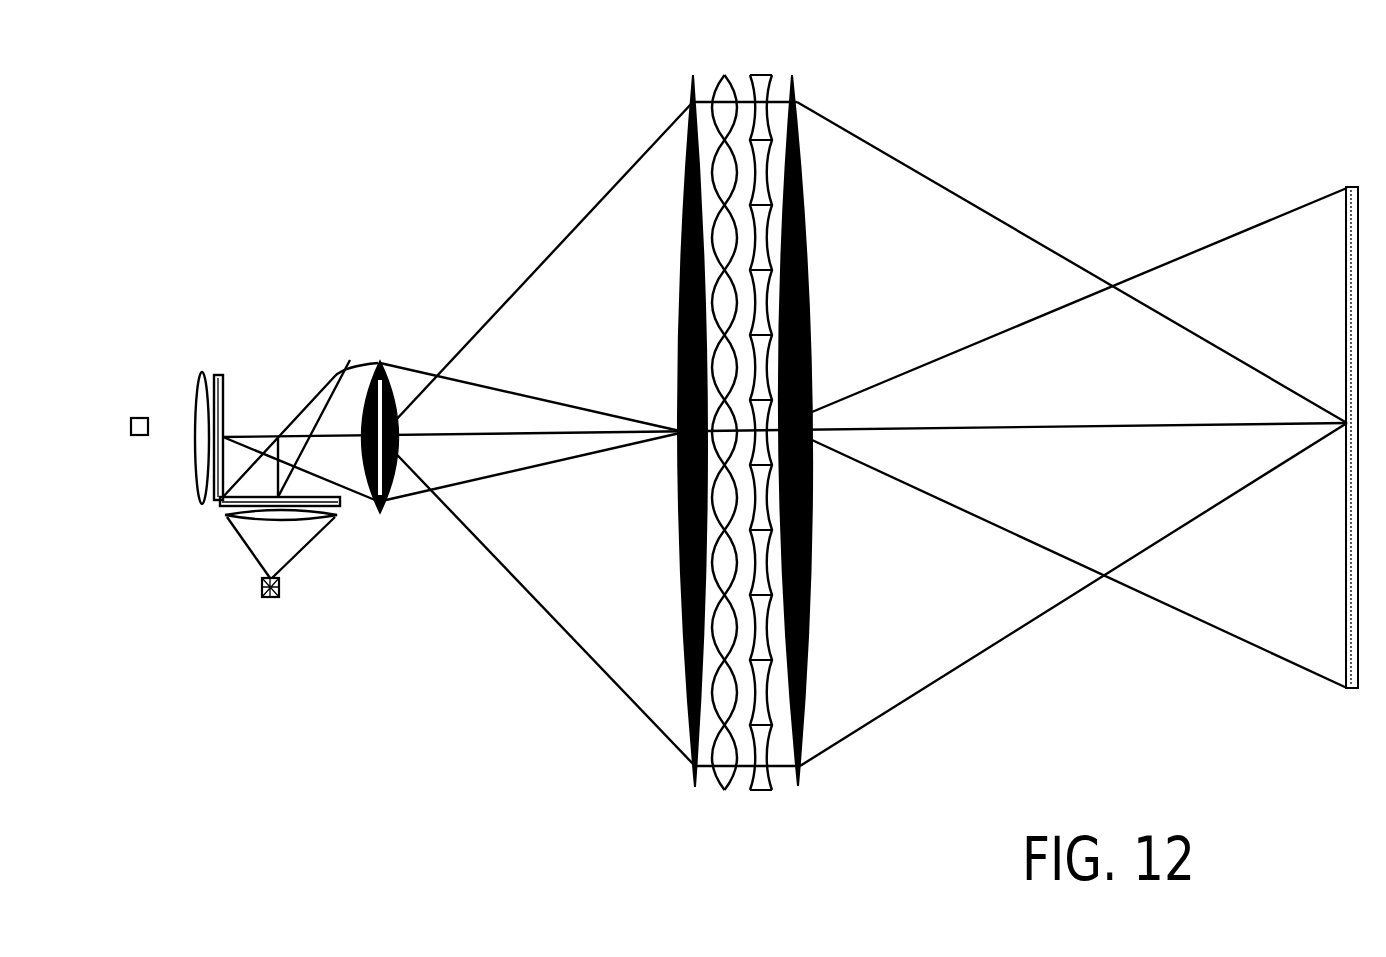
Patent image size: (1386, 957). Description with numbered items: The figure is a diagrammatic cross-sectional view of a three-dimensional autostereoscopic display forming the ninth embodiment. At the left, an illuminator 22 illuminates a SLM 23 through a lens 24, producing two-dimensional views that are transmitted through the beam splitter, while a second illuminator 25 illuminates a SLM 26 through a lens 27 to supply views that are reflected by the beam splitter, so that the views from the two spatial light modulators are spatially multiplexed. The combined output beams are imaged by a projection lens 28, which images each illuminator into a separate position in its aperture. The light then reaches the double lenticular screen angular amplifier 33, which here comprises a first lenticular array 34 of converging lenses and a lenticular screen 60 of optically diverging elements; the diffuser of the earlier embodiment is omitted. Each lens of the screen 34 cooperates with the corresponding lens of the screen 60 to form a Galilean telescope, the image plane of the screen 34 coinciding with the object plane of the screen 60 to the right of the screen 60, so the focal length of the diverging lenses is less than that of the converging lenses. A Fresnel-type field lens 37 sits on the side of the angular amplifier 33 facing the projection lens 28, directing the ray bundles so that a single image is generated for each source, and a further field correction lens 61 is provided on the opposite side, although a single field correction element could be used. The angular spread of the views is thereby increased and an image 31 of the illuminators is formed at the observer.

The illuminator 22 is at (131, 420).
The SLM 23 is at (217, 372).
The lens 24 is at (196, 372).
The illuminator 25 is at (270, 598).
The SLM 26 is at (341, 504).
The lens 27 is at (228, 516).
The projection lens 28 is at (380, 362).
The image of the illuminators 31 is at (1348, 690).
The double lenticular screen angular amplifier 33 is at (775, 443).
The first lenticular array 34 is at (724, 786).
The field lens 37 is at (695, 720).
The lenticular screen 60 is at (770, 778).
The field correction lens 61 is at (808, 702).